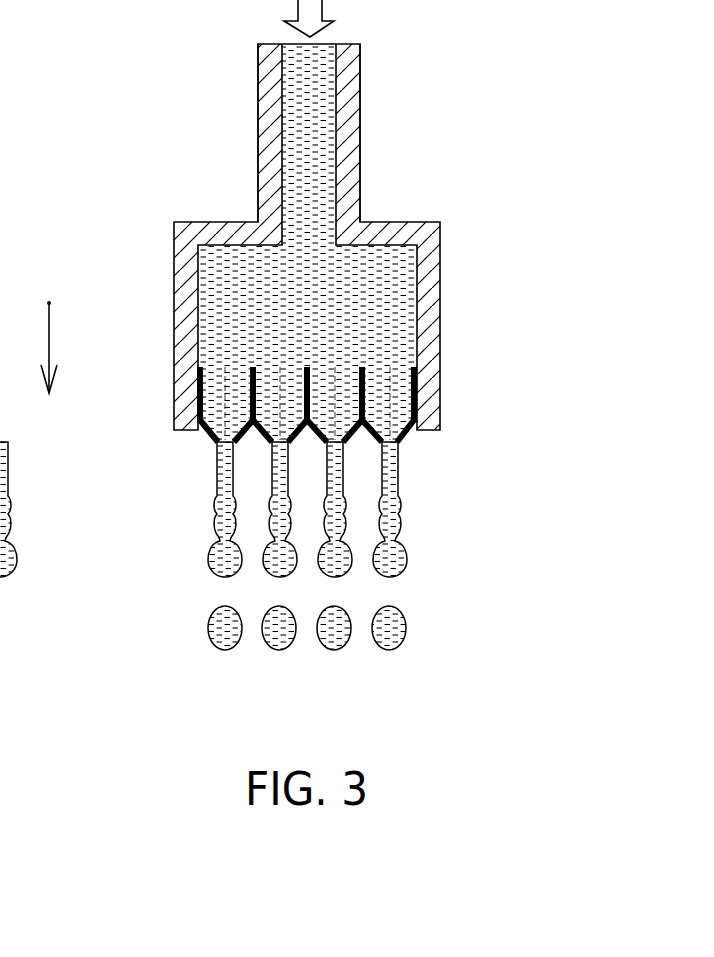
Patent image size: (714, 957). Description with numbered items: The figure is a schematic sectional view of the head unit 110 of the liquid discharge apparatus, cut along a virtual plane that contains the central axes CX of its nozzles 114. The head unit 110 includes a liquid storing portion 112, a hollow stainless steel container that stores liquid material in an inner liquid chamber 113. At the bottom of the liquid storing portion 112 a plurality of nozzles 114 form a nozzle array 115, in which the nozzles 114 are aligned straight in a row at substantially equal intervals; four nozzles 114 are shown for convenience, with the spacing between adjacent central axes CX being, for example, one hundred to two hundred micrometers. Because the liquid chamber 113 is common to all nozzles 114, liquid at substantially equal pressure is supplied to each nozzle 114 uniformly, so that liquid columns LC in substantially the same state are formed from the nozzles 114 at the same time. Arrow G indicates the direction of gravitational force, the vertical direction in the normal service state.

The head unit 110 is at (492, 112).
The liquid storing portion 112 is at (347, 172).
The liquid chamber 113 is at (327, 301).
The central axis CX is at (393, 392).
The nozzle 114 is at (396, 444).
The nozzle array 115 is at (410, 472).
The liquid column LC is at (401, 526).
The arrow G is at (49, 333).